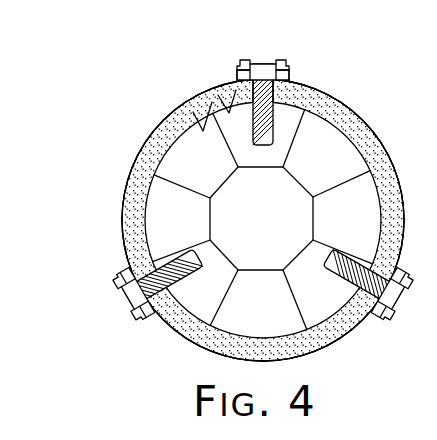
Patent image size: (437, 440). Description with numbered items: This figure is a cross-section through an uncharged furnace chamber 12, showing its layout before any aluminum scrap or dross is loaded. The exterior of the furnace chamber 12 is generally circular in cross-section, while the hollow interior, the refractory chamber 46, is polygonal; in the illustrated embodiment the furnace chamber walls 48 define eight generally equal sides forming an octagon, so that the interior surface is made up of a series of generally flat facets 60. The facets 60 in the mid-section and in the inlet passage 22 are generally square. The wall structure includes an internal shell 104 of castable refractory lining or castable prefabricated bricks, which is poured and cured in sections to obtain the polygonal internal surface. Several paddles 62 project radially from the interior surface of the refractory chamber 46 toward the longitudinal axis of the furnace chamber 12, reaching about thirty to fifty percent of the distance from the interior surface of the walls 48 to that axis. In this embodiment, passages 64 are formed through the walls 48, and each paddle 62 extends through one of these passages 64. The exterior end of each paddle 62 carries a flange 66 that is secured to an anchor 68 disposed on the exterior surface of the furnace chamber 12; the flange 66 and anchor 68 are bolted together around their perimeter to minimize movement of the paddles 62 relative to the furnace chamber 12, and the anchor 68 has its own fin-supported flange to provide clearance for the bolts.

The furnace chamber 12 is at (158, 120).
The inlet passage 22 is at (283, 234).
The refractory chamber 46 is at (275, 317).
The furnace chamber walls 48 is at (120, 207).
The facets 60 is at (229, 113).
The paddle 62 is at (275, 125).
The passages 64 is at (247, 103).
The flange 66 is at (275, 60).
The anchor 68 is at (283, 74).
The internal shell 104 is at (172, 328).